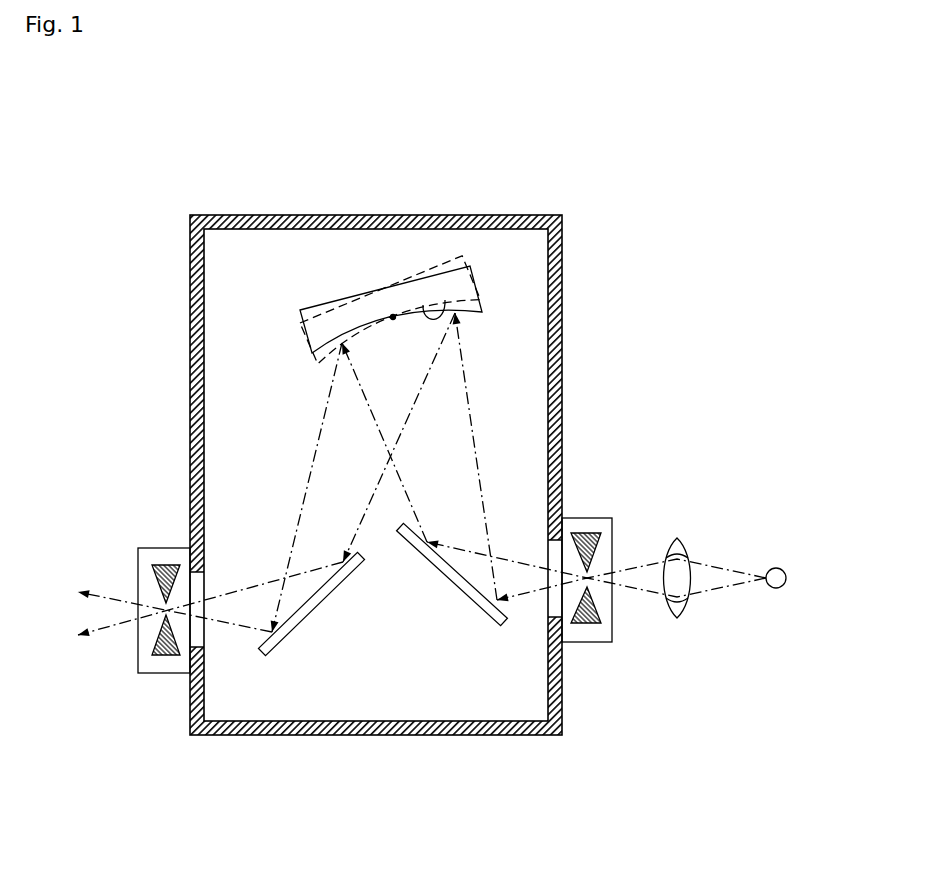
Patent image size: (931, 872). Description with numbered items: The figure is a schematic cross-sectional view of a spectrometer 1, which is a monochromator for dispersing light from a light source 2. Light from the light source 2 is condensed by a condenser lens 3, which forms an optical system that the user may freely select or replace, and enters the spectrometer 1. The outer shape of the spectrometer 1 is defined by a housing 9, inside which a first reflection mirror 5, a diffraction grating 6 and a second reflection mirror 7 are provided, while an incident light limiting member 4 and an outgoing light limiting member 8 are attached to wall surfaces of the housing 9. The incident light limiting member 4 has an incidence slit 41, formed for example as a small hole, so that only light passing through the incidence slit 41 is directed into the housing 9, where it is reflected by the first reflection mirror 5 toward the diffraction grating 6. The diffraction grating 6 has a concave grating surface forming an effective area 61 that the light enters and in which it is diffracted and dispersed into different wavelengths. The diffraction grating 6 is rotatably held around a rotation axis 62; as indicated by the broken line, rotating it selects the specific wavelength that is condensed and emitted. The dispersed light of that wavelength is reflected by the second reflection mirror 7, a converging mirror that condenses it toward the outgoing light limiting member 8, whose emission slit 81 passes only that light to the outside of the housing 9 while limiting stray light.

The spectrometer 1 is at (505, 177).
The light source 2 is at (779, 568).
The condenser lens 3 is at (677, 540).
The incident light limiting member 4 is at (620, 587).
The incidence slit 41 is at (598, 592).
The first reflection mirror 5 is at (470, 598).
The diffraction grating 6 is at (381, 259).
The effective area 61 is at (445, 300).
The rotation axis 62 is at (393, 317).
The second reflection mirror 7 is at (300, 623).
The outgoing light limiting member 8 is at (136, 619).
The emission slit 81 is at (163, 618).
The housing 9 is at (360, 735).